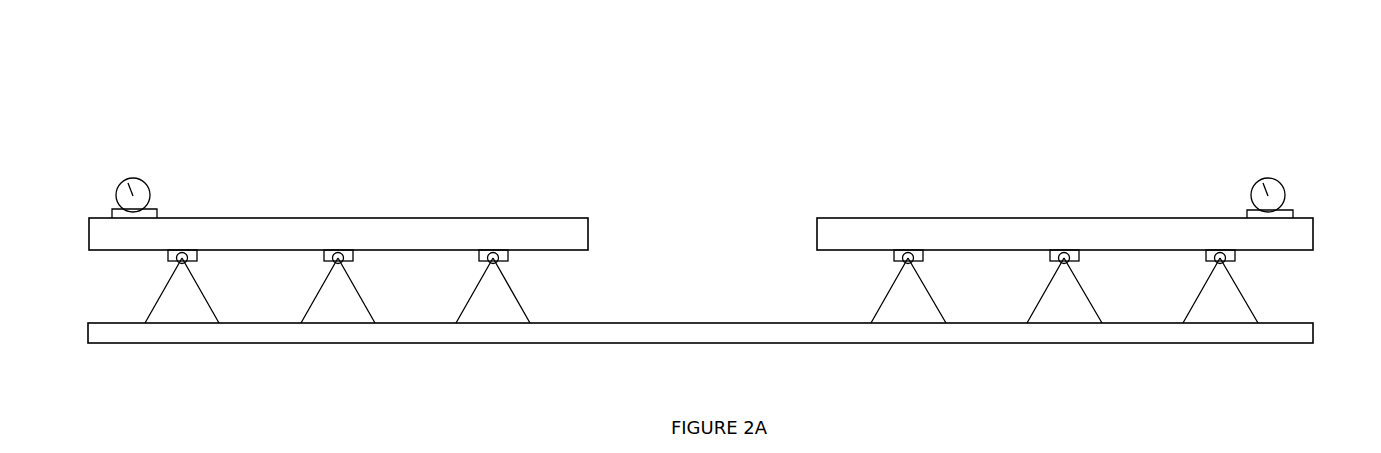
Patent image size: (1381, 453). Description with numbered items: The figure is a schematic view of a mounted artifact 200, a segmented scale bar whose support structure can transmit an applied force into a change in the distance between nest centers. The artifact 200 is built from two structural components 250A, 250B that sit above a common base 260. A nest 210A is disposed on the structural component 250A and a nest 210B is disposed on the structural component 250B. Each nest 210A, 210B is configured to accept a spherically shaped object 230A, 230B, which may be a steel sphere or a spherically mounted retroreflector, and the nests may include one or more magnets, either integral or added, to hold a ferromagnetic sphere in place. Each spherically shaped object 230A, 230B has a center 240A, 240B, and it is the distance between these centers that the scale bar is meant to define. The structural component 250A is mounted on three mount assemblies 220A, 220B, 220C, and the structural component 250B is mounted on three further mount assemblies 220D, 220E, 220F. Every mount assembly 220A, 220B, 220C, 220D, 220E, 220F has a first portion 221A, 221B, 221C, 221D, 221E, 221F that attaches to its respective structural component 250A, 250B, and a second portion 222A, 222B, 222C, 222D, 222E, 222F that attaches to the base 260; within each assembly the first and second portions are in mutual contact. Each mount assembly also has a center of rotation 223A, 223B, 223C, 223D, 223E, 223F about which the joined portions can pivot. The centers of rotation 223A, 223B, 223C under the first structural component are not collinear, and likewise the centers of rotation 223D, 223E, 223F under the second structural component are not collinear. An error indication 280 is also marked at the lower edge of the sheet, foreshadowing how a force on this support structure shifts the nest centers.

The mounted artifact 200 is at (697, 91).
The nest 210A is at (112, 210).
The nest 210B is at (1247, 210).
The mount assembly 220A is at (172, 349).
The mount assembly 220B is at (328, 349).
The mount assembly 220C is at (483, 349).
The mount assembly 220D is at (899, 349).
The mount assembly 220E is at (1055, 349).
The mount assembly 220F is at (1211, 349).
The first portion 221A is at (167, 256).
The first portion 221B is at (323, 256).
The first portion 221C is at (478, 256).
The first portion 221D is at (893, 256).
The first portion 221E is at (1049, 256).
The first portion 221F is at (1205, 256).
The second portion 222A is at (157, 302).
The second portion 222B is at (313, 302).
The second portion 222C is at (468, 302).
The second portion 222D is at (883, 302).
The second portion 222E is at (1039, 302).
The second portion 222F is at (1195, 302).
The center of rotation 223A is at (177, 262).
The center of rotation 223B is at (333, 262).
The center of rotation 223C is at (488, 262).
The center of rotation 223D is at (903, 262).
The center of rotation 223E is at (1059, 262).
The center of rotation 223F is at (1215, 262).
The spherically shaped object 230A is at (150, 195).
The spherically shaped object 230B is at (1285, 195).
The center 240A is at (126, 178).
The center 240B is at (1262, 178).
The structural component 250A is at (513, 218).
The structural component 250B is at (968, 218).
The base 260 is at (700, 322).
The error indication 280 is at (1300, 444).